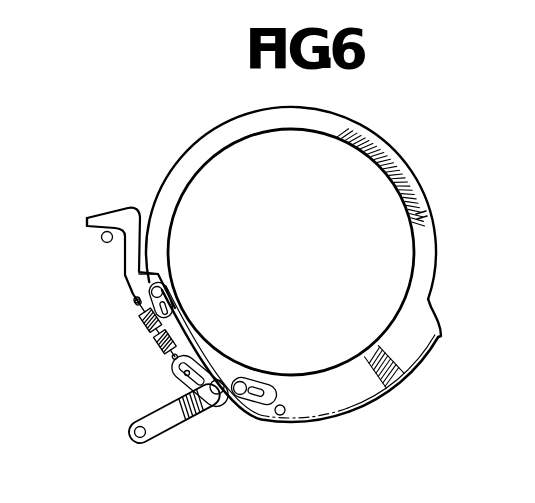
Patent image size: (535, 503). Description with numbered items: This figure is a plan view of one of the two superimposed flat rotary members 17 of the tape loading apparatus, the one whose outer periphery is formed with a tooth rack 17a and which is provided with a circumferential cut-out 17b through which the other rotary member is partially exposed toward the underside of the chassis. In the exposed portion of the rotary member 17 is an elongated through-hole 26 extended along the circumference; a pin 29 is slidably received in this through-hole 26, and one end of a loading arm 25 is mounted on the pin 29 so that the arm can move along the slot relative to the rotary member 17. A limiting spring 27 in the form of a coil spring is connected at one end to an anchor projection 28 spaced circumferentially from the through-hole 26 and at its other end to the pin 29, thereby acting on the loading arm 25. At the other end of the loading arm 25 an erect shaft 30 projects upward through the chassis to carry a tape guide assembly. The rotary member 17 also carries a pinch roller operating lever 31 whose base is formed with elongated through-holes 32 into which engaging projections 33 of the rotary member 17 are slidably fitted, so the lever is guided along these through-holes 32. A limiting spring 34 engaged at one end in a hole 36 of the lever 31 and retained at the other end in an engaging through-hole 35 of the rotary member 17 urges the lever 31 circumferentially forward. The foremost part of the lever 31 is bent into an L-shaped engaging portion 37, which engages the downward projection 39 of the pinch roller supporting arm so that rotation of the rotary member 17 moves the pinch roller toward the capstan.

The rotary member 17 is at (368, 131).
The tooth rack 17a is at (413, 383).
The circumferential cut-out 17b is at (423, 200).
The loading arm 25 is at (174, 422).
The elongated through-hole 26 is at (184, 378).
The limiting spring 27 is at (238, 400).
The anchor projection 28 is at (283, 414).
The pin 29 is at (213, 398).
The erect shaft 30 is at (140, 438).
The pinch roller operating lever 31 is at (126, 274).
The elongated through-hole 32 is at (156, 342).
The engaging projection 33 is at (163, 294).
The limiting spring 34 is at (146, 320).
The engaging through-hole 35 is at (192, 343).
The hole 36 is at (134, 301).
The L-shaped engaging portion 37 is at (86, 220).
The projection 39 is at (106, 242).